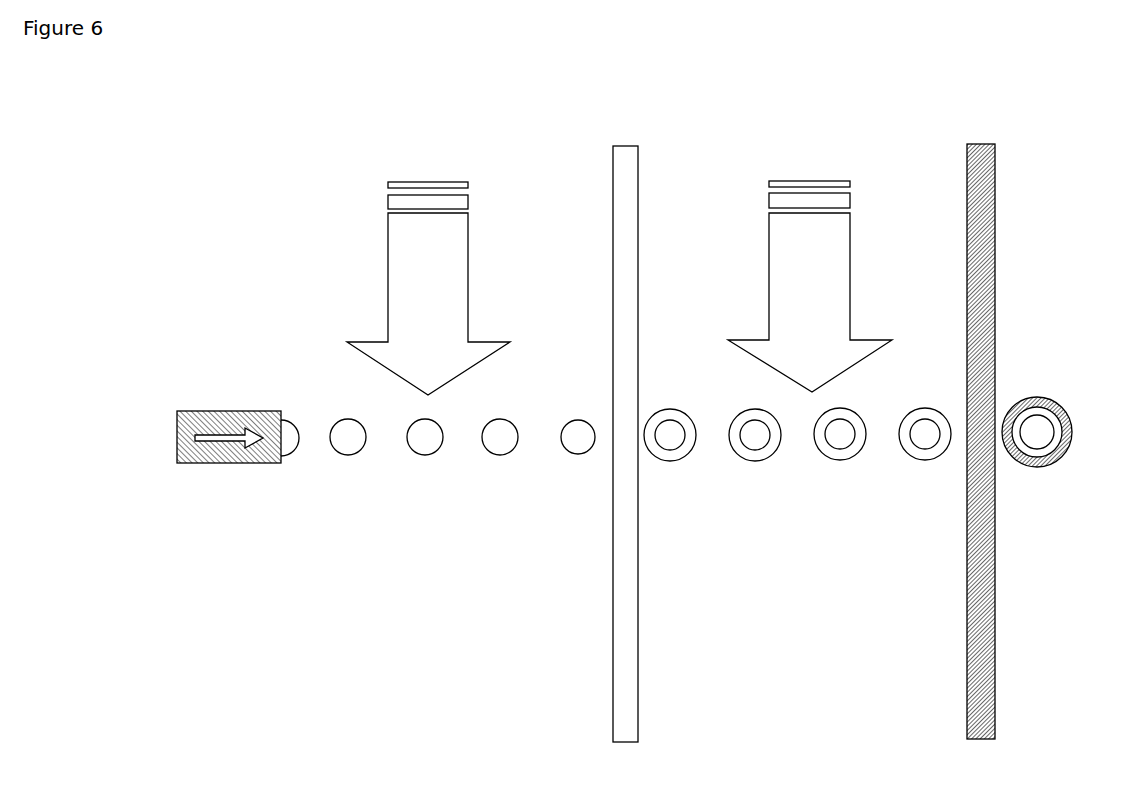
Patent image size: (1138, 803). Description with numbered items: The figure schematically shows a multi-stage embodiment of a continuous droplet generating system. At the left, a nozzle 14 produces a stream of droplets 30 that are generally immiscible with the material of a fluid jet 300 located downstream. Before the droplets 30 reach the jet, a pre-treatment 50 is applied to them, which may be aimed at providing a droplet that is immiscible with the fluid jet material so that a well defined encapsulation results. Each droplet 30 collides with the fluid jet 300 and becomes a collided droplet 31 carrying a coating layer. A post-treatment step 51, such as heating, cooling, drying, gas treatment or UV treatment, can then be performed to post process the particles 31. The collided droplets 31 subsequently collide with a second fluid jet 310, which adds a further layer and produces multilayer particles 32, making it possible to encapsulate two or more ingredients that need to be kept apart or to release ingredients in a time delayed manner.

The nozzle 14 is at (223, 487).
The droplet 30 is at (352, 476).
The collided droplet 31 is at (757, 473).
The multilayer particle 32 is at (1033, 472).
The pre-treatment 50 is at (405, 240).
The post-treatment step 51 is at (820, 240).
The fluid jet 300 is at (628, 208).
The second fluid jet 310 is at (982, 217).